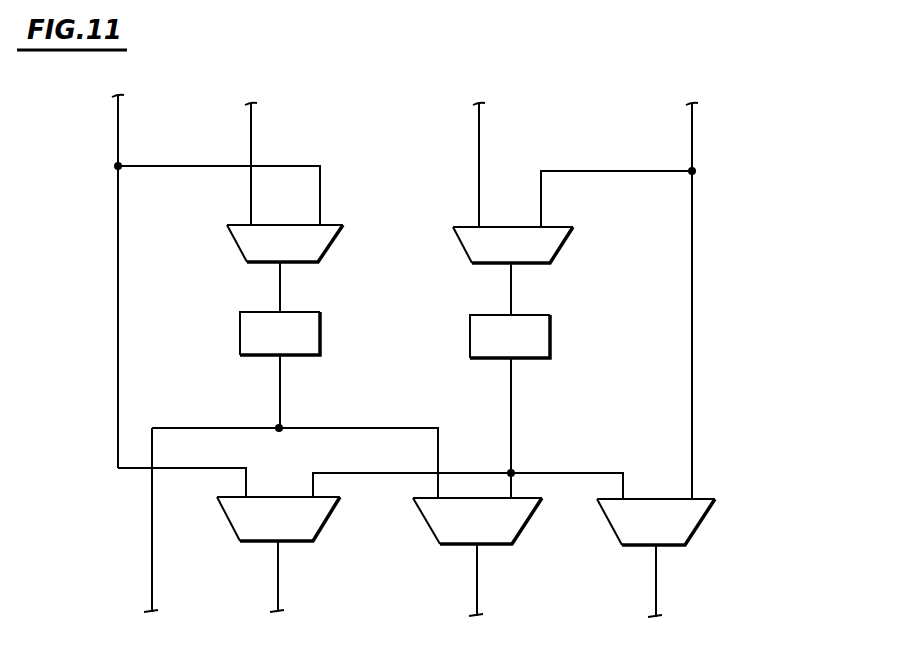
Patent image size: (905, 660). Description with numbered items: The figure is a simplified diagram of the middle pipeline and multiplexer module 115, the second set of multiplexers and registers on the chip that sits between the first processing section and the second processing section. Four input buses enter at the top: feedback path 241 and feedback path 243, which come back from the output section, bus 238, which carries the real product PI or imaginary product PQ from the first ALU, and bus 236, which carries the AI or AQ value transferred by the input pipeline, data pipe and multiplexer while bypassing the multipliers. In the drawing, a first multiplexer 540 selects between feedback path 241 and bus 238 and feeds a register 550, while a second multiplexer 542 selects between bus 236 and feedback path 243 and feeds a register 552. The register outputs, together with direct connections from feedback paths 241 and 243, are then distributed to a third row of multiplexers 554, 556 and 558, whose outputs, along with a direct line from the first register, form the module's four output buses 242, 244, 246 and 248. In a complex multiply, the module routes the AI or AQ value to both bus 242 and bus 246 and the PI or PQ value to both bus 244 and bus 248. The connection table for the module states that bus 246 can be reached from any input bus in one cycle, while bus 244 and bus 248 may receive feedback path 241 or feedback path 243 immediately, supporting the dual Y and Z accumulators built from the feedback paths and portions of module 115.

The middle multiplexer set 115 is at (751, 35).
The bus 236 is at (479, 114).
The bus 238 is at (251, 112).
The feedback path 241 is at (118, 110).
The feedback path 243 is at (692, 114).
The bus 242 is at (152, 592).
The bus 244 is at (278, 593).
The bus 246 is at (477, 597).
The bus 248 is at (656, 596).
The multiplexer 540 is at (335, 243).
The multiplexer 542 is at (566, 244).
The register 550 is at (322, 337).
The register 552 is at (552, 339).
The multiplexer 554 is at (330, 520).
The multiplexer 556 is at (528, 522).
The multiplexer 558 is at (703, 522).